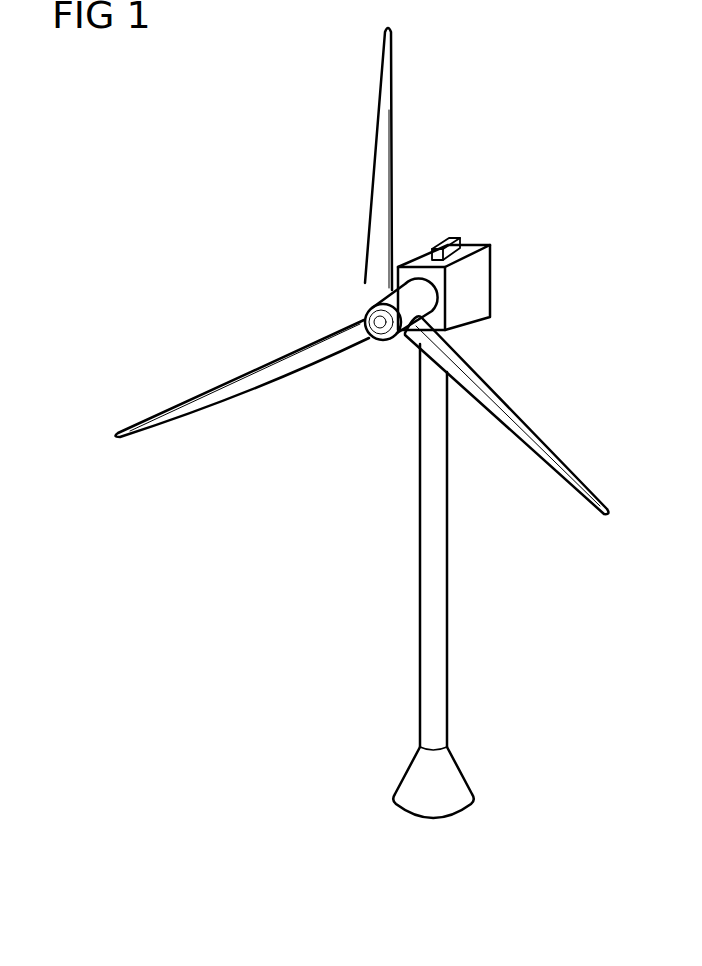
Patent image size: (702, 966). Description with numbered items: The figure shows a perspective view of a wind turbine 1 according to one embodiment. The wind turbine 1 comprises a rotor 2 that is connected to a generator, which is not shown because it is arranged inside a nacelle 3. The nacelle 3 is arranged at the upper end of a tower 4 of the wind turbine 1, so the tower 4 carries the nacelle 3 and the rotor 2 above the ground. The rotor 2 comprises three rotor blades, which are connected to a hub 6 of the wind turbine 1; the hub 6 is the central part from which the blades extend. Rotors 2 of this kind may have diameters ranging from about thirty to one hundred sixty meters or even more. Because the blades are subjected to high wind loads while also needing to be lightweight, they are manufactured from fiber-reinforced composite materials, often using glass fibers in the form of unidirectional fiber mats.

The wind turbine 1 is at (214, 167).
The rotor 2 is at (216, 365).
The nacelle 3 is at (475, 292).
The tower 4 is at (440, 697).
The hub 6 is at (423, 308).